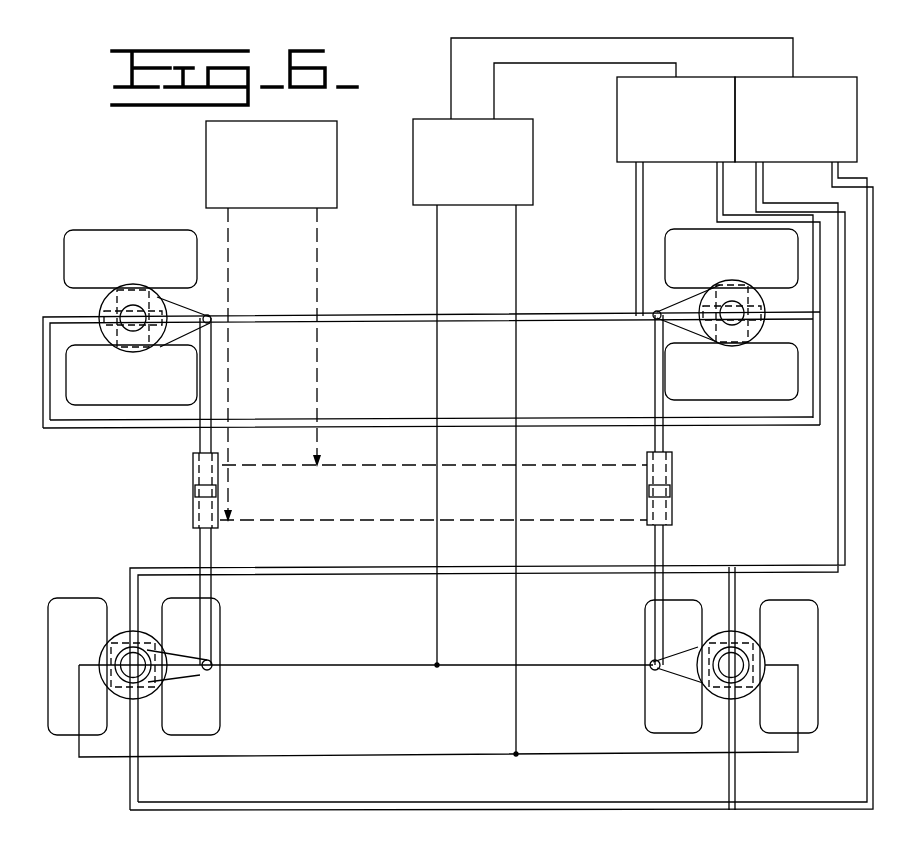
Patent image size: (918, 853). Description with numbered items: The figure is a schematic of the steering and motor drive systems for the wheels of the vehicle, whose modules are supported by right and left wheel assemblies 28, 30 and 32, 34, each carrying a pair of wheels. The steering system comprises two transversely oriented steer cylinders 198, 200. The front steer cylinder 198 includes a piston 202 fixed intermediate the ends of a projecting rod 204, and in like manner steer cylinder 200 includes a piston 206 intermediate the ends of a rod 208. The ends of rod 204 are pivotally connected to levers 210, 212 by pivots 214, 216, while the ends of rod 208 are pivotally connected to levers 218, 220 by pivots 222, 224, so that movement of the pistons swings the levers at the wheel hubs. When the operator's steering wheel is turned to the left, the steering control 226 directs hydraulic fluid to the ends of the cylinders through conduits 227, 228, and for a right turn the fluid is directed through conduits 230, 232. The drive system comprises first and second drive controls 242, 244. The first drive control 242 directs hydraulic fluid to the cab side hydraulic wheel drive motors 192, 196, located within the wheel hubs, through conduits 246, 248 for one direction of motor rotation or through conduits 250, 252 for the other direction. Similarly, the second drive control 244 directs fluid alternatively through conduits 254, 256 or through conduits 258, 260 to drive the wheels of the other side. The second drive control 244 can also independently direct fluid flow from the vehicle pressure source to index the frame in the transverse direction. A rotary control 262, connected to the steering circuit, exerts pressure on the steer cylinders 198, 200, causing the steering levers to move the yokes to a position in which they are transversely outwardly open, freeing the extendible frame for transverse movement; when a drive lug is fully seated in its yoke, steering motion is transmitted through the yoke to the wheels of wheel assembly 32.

The right wheel assembly 28 is at (167, 676).
The left wheel assembly 30 is at (693, 314).
The right wheel assembly 32 is at (699, 676).
The left wheel assembly 34 is at (157, 298).
The hydraulic wheel drive motor 192 is at (752, 323).
The hydraulic wheel drive motor 196 is at (122, 313).
The front steer cylinder 198 is at (674, 460).
The steer cylinder 200 is at (193, 462).
The piston 202 is at (675, 490).
The rod 204 is at (658, 544).
The piston 206 is at (195, 491).
The rod 208 is at (200, 546).
The lever 210 is at (662, 672).
The lever 212 is at (678, 304).
The pivot 214 is at (650, 662).
The pivot 216 is at (652, 323).
The lever 218 is at (200, 676).
The lever 220 is at (190, 306).
The pivot 222 is at (212, 660).
The pivot 224 is at (214, 326).
The steering control 226 is at (328, 205).
The conduit 227 is at (231, 380).
The conduit 228 is at (266, 520).
The conduit 230 is at (318, 257).
The conduit 232 is at (602, 463).
The first drive control 242 is at (617, 97).
The second drive control 244 is at (822, 77).
The conduit 246 is at (636, 198).
The conduit 248 is at (574, 312).
The conduit 250 is at (717, 178).
The conduit 252 is at (580, 417).
The conduit 254 is at (820, 210).
The conduit 256 is at (735, 588).
The conduit 258 is at (867, 503).
The conduit 260 is at (735, 776).
The rotary control 262 is at (413, 133).